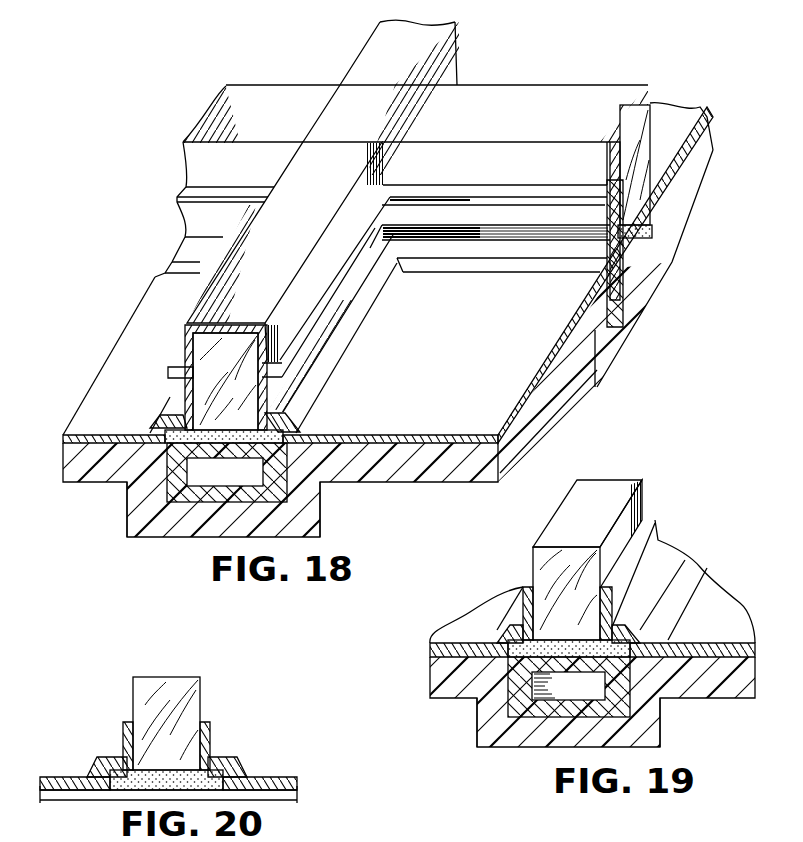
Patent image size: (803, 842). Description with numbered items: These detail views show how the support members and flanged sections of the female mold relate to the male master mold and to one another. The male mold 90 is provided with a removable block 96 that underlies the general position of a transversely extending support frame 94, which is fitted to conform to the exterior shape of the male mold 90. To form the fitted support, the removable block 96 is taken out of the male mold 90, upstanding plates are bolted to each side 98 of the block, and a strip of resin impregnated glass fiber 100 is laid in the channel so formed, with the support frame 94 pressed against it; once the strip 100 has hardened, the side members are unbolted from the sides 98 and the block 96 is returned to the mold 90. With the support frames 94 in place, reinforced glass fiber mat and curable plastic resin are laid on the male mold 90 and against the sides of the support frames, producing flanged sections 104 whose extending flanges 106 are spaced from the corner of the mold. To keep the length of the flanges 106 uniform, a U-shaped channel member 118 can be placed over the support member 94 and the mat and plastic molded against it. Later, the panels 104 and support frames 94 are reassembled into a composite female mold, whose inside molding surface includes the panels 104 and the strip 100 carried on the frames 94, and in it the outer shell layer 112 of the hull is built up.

In FIG. 18, the male mold 90 is at (507, 443).
In FIG. 19, the male mold 90 is at (697, 683).
In FIG. 18, the support frame 94 is at (237, 389).
In FIG. 19, the support frame 94 is at (643, 483).
In FIG. 20, the support frame 94 is at (160, 680).
In FIG. 18, the removable block 96 is at (287, 473).
In FIG. 19, the removable block 96 is at (548, 717).
In FIG. 18, the side 98 is at (140, 492).
In FIG. 19, the side 98 is at (508, 677).
In FIG. 18, the strip of resin impregnated glass fiber 100 is at (213, 443).
In FIG. 19, the strip of resin impregnated glass fiber 100 is at (630, 652).
In FIG. 20, the strip of resin impregnated glass fiber 100 is at (215, 770).
In FIG. 18, the flanged section 104 is at (174, 322).
In FIG. 19, the flanged section 104 is at (592, 588).
In FIG. 20, the flanged section 104 is at (50, 779).
In FIG. 18, the extending flange 106 is at (278, 388).
In FIG. 20, the extending flange 106 is at (123, 728).
In FIG. 20, the outer shell layer 112 is at (93, 798).
In FIG. 18, the U-shaped channel member 118 is at (506, 129).